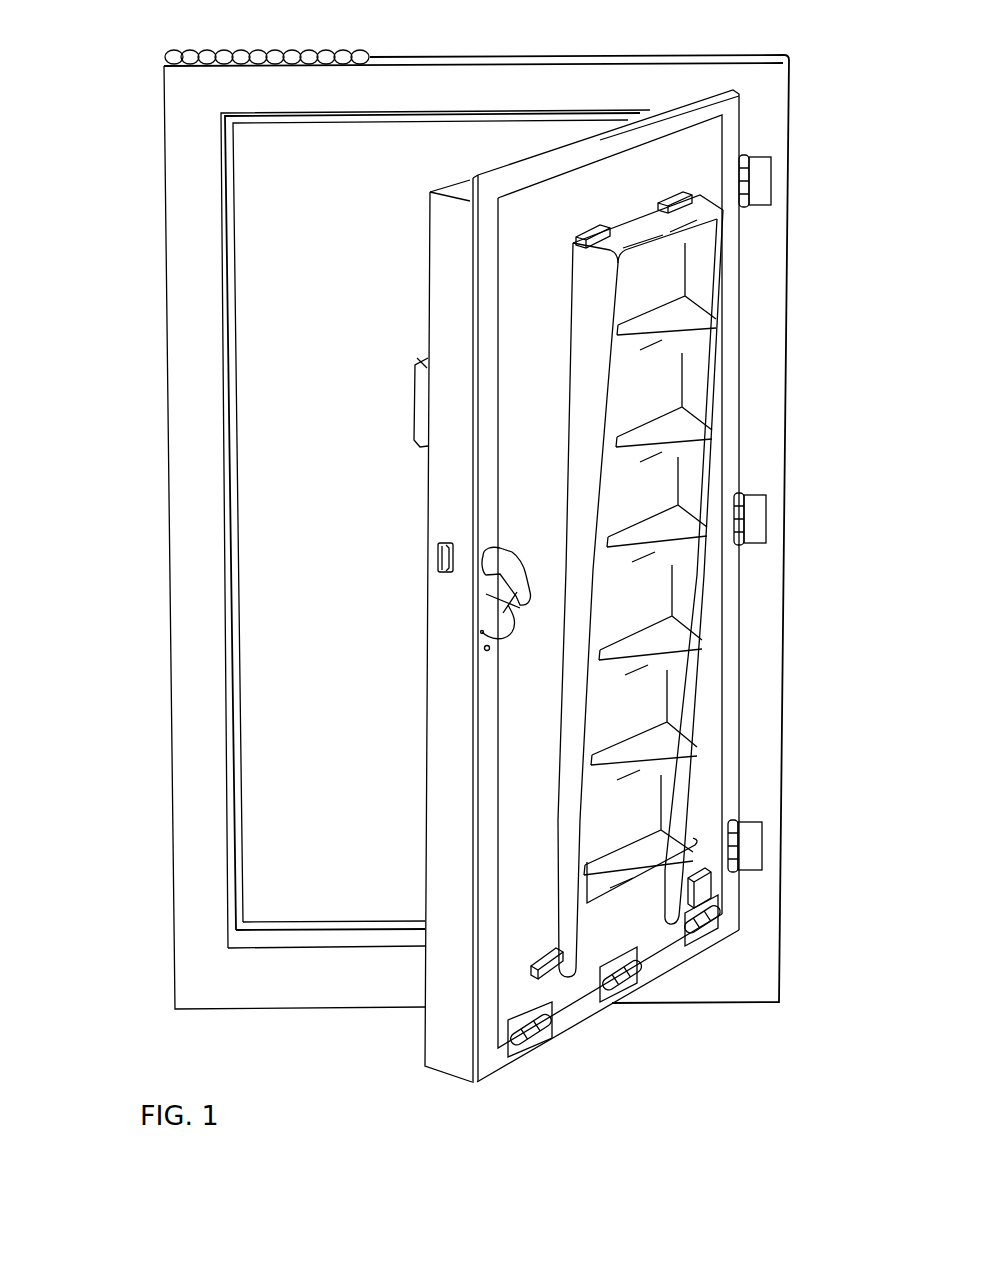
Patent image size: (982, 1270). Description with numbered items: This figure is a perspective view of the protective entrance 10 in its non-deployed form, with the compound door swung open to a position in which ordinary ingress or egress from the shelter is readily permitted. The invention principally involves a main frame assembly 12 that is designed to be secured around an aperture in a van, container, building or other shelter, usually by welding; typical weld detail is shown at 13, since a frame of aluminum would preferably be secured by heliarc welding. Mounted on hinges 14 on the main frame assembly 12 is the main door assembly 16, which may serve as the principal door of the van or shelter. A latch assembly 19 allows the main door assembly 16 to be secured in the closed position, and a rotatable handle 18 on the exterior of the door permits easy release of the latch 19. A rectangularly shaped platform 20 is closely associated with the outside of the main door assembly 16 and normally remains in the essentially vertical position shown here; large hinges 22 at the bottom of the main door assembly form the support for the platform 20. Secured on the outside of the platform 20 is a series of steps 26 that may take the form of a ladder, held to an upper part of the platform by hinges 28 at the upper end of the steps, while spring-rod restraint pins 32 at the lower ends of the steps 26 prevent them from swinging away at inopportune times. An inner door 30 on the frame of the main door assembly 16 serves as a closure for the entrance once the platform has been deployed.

The protective entrance 10 is at (311, 1016).
The main frame assembly 12 is at (176, 642).
The weld detail 13 is at (328, 52).
The hinges 14 is at (762, 185).
The main door assembly 16 is at (448, 1057).
The rotatable handle 18 is at (507, 577).
The latch assembly 19 is at (438, 556).
The platform 20 is at (510, 493).
The large hinges 22 is at (620, 987).
The steps 26 is at (698, 400).
The hinges 28 is at (680, 190).
The inner door 30 is at (440, 318).
The spring-rod restraint pins 32 is at (548, 950).